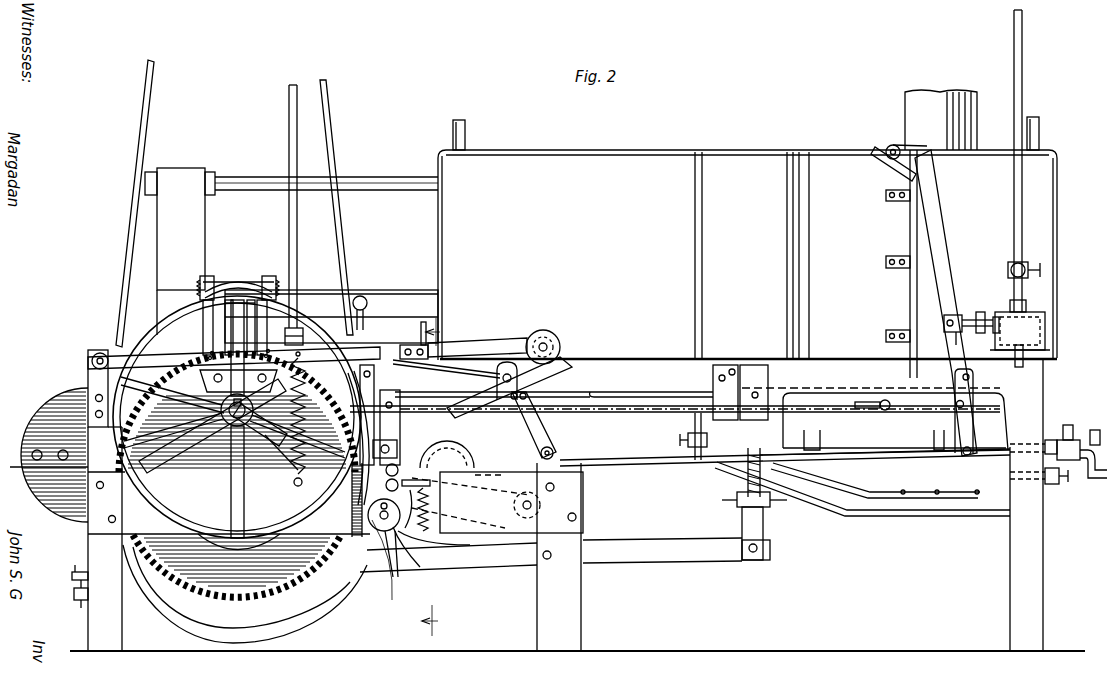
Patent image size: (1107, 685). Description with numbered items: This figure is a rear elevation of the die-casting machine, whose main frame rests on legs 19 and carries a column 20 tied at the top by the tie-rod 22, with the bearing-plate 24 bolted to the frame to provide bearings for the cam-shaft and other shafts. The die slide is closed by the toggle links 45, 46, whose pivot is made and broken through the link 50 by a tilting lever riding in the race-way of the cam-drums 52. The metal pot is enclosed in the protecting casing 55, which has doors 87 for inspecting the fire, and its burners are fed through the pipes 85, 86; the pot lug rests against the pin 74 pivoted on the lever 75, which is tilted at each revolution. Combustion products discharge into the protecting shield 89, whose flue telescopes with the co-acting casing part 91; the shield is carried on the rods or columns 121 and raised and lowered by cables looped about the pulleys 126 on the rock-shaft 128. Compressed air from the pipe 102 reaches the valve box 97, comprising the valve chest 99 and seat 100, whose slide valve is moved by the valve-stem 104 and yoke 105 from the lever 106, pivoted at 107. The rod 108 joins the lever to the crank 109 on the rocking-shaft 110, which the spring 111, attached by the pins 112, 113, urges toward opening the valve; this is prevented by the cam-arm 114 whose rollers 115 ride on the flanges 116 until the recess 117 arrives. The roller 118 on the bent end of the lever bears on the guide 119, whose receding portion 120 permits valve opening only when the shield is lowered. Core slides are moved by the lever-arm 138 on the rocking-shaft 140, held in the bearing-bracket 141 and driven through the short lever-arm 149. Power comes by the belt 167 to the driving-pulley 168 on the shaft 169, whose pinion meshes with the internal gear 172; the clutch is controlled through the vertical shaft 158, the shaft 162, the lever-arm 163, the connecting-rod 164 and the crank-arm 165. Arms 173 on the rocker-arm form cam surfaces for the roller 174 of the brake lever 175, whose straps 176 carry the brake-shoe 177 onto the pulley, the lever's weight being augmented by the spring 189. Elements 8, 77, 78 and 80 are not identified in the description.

The section line 8 is at (436, 476).
The legs 19 is at (88, 625).
The column 20 is at (178, 170).
The tie-rod 22 is at (372, 191).
The bearing-plate 24 is at (229, 450).
The link 45 is at (396, 292).
The link 46 is at (310, 292).
The link 50 is at (383, 315).
The cam-drum 52 is at (300, 612).
The protecting casing 55 is at (862, 477).
The pin 74 is at (728, 436).
The lever 75 is at (640, 563).
The bolt 77 is at (72, 575).
The motor 78 is at (50, 520).
The screw jack 80 is at (770, 522).
The pipe 85 is at (1065, 426).
The pipe 86 is at (1094, 430).
The doors 87 is at (895, 421).
The protecting shield 89 is at (1057, 213).
The co-acting part of the casing 91 is at (977, 125).
The valve box 97 is at (1045, 330).
The valve chest 99 is at (1045, 312).
The valve seat 100 is at (1030, 340).
The pipe 102 is at (1014, 214).
The valve-stem 104 is at (968, 315).
The yoke 105 is at (958, 340).
The lever 106 is at (936, 242).
The pivot 107 is at (953, 406).
The rod 108 is at (622, 468).
The crank 109 is at (432, 510).
The rocking-shaft 110 is at (410, 560).
The spring 111 is at (430, 526).
The pin 112 is at (430, 486).
The pin 113 is at (439, 547).
The cam-arm 114 is at (344, 500).
The rollers 115 is at (397, 543).
The flanges 116 is at (338, 572).
The recess 117 is at (352, 525).
The roller 118 is at (890, 146).
The guide 119 is at (910, 231).
The receding portion 120 is at (888, 168).
The rods or columns 121 is at (465, 135).
The pulleys 126 is at (465, 460).
The rock-shaft 128 is at (540, 505).
The lever-arm 138 is at (768, 392).
The rocking-shaft 140 is at (648, 414).
The bearing-bracket 141 is at (718, 392).
The lever-arm 149 is at (394, 394).
The vertical shaft 158 is at (287, 123).
The shaft 162 is at (553, 453).
The lever-arm 163 is at (528, 436).
The connecting-rod 164 is at (446, 375).
The crank-arm 165 is at (303, 336).
The belt 167 is at (143, 105).
The driving-pulley 168 is at (172, 496).
The shaft 169 is at (280, 478).
The internal gear 172 is at (175, 600).
The arms 173 is at (572, 360).
The roller 174 is at (544, 334).
The arm 175 is at (113, 356).
The metal straps 176 is at (204, 280).
The brake-shoe 177 is at (234, 280).
The spring 189 is at (305, 378).